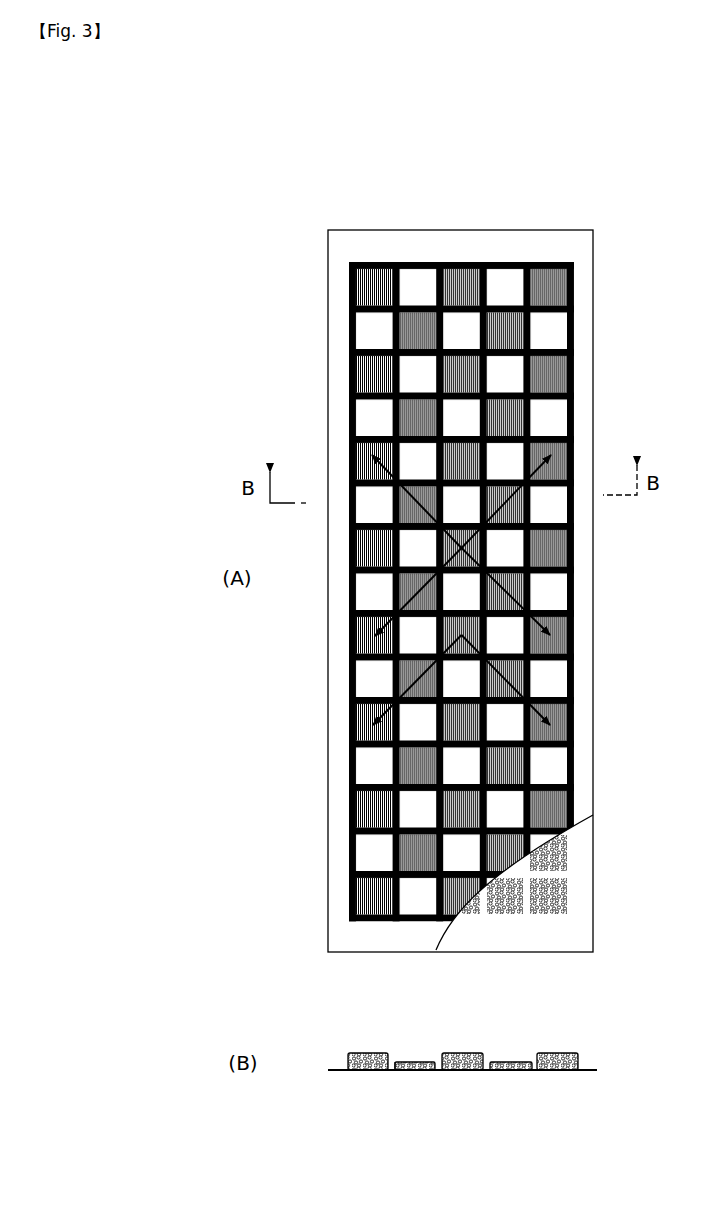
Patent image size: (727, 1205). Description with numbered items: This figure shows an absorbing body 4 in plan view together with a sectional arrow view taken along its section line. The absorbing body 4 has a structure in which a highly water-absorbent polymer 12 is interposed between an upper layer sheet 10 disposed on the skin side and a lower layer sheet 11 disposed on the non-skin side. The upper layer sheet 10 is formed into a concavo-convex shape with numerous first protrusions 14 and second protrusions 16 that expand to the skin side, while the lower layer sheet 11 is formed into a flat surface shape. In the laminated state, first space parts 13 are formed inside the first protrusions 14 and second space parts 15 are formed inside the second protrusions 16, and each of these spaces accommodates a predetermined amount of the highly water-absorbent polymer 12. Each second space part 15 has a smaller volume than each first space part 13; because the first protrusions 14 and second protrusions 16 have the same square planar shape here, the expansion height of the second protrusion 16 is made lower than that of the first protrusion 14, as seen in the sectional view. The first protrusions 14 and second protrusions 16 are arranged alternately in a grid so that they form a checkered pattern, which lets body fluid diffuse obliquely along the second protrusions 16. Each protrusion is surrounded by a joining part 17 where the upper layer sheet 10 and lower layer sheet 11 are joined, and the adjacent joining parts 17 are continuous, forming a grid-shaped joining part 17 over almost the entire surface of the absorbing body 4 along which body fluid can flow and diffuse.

The absorbing body 4 is at (619, 282).
The upper layer sheet 10 is at (587, 802).
The lower layer sheet 11 is at (588, 872).
The highly water-absorbent polymer 12 is at (565, 899).
The first space part 13 is at (450, 1051).
The first protrusion 14 is at (575, 577).
The second space part 15 is at (400, 1052).
The second protrusion 16 is at (575, 630).
The joining part 17 is at (575, 383).